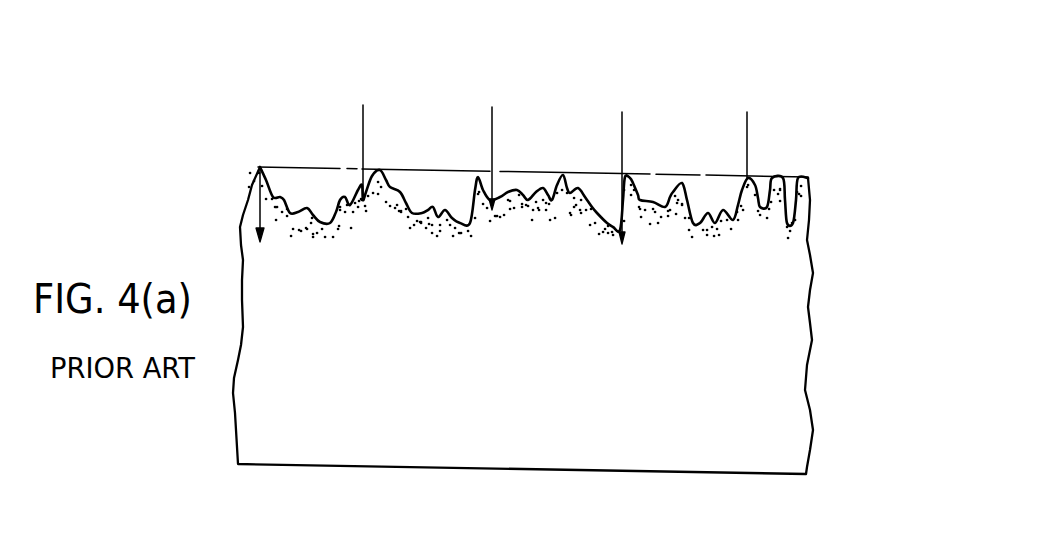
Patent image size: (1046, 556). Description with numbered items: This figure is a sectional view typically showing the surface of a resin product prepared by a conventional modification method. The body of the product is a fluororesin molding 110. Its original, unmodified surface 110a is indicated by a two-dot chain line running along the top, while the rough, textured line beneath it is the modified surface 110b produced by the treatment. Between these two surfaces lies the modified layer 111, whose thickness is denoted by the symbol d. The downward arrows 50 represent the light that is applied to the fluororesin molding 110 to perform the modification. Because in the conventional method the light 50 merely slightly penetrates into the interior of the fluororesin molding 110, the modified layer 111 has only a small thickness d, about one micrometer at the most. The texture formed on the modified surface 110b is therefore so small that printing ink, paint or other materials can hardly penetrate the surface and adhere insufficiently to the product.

The fluororesin molding 110 is at (804, 108).
The modified layer 111 is at (852, 177).
The unmodified surface 110a is at (673, 172).
The modified surface 110b is at (588, 183).
The light 50 is at (363, 127).
The thickness of the modified layer d is at (250, 201).